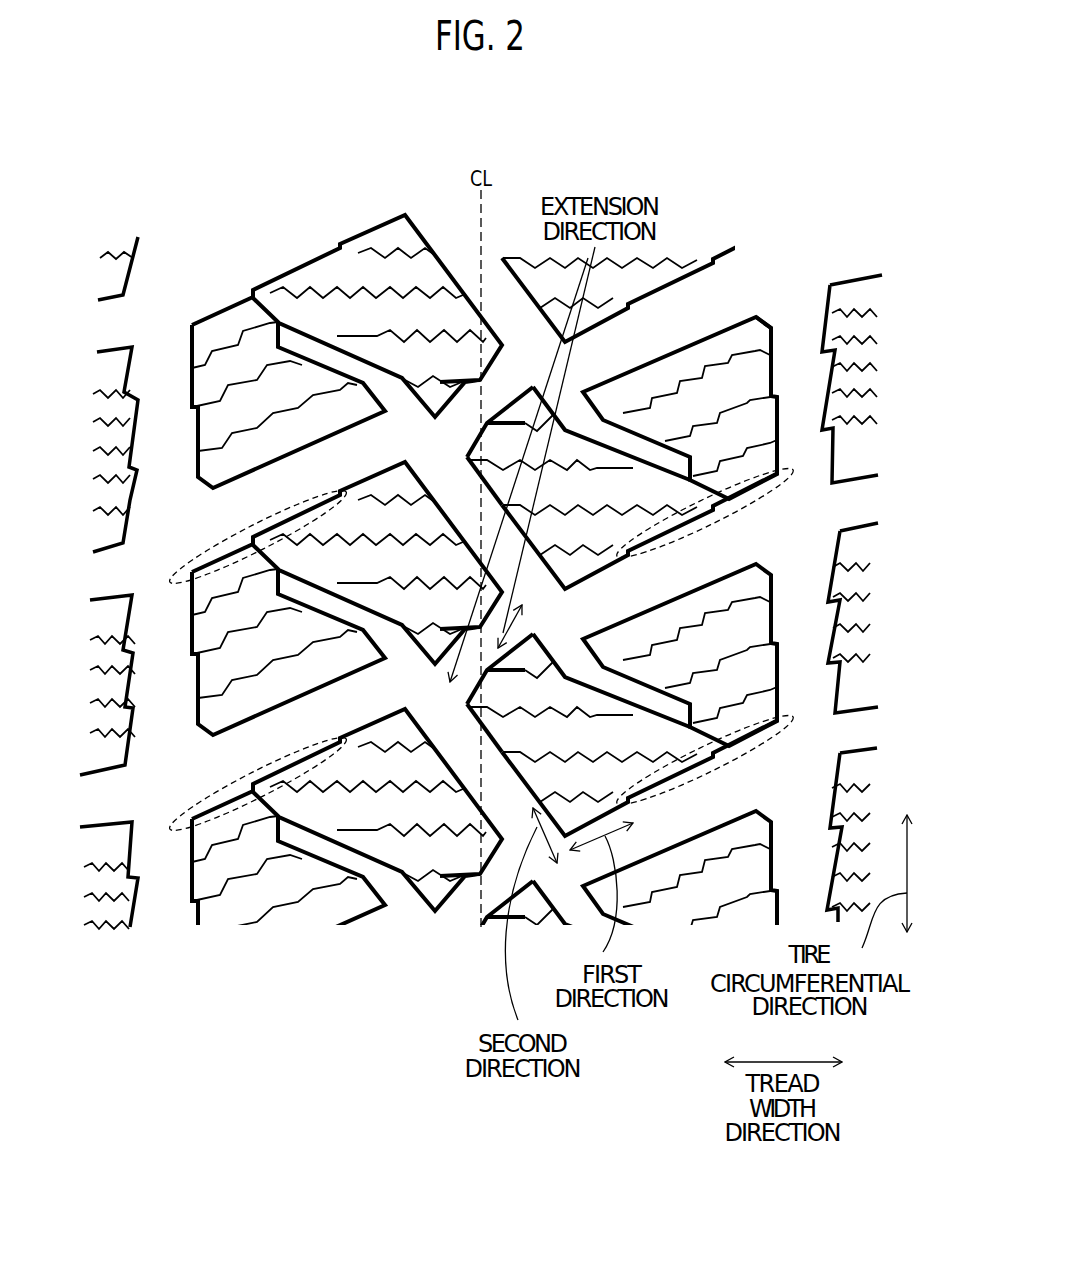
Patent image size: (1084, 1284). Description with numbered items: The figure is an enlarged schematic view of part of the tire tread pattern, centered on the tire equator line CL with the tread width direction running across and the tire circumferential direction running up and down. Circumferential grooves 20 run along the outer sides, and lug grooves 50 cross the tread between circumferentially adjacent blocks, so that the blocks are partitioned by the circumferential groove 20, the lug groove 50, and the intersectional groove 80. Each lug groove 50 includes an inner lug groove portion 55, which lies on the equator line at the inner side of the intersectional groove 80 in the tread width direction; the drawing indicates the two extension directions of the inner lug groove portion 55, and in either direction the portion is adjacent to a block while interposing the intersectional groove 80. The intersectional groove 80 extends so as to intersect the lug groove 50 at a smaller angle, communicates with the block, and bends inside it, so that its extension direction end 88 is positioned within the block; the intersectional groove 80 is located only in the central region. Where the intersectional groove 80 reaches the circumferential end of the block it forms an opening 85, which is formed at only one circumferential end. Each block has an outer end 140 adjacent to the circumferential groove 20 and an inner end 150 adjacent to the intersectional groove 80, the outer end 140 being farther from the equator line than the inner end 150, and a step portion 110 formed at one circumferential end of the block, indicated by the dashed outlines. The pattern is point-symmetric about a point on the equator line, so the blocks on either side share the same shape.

The circumferential groove 20 is at (160, 272).
The lug groove 50 is at (731, 292).
The inner lug groove portion 55 is at (428, 645).
The intersectional groove 80 is at (468, 510).
The opening 85 is at (398, 392).
The extension direction end 88 is at (292, 342).
The step portion 110 is at (193, 546).
The outer end 140 is at (773, 348).
The inner end 150 is at (475, 475).